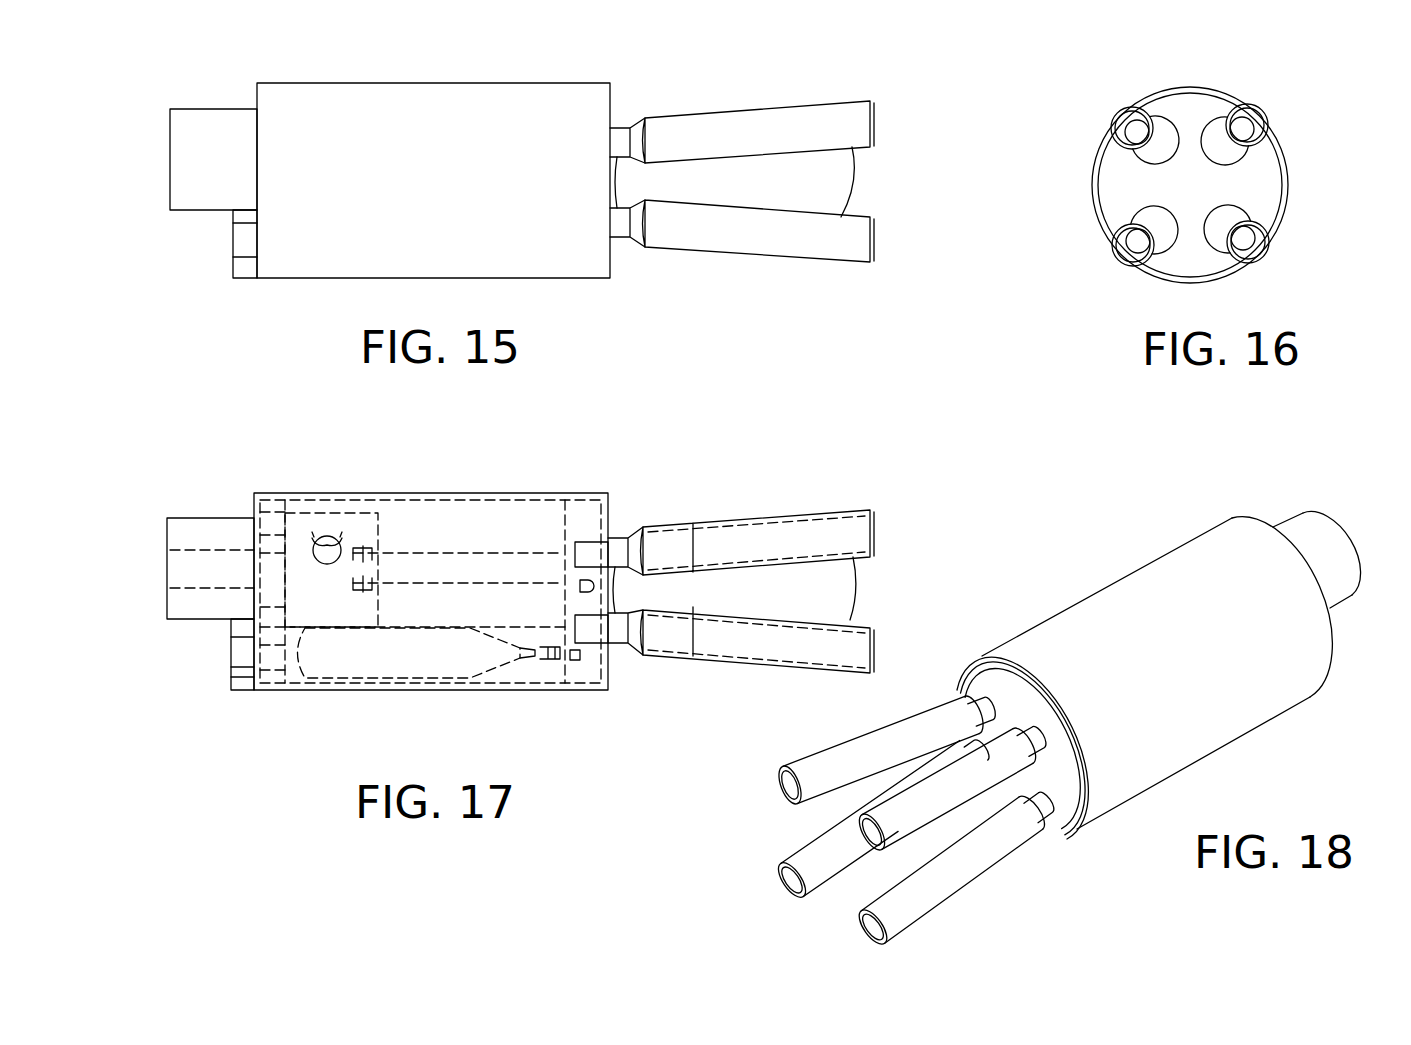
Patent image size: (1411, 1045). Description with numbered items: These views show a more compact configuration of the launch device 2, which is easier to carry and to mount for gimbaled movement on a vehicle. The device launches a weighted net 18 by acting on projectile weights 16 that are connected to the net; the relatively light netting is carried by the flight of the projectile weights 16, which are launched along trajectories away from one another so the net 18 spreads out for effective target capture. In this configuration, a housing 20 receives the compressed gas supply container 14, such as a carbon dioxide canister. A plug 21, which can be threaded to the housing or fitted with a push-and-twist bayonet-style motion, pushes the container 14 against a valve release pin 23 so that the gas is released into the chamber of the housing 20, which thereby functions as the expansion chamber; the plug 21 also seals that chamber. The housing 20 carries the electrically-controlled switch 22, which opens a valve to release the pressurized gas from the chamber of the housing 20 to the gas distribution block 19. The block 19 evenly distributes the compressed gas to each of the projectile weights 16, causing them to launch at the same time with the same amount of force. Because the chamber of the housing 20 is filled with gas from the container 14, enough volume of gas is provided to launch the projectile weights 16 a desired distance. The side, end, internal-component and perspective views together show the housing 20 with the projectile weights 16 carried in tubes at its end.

In FIG. 15, the launch device 2 is at (555, 192).
In FIG. 16, the launch device 2 is at (1204, 160).
In FIG. 17, the launch device 2 is at (556, 593).
In FIG. 18, the launch device 2 is at (1064, 691).
In FIG. 17, the compressed carbon dioxide container 14 is at (412, 657).
In FIG. 15, the projectile weights 16 is at (838, 220).
In FIG. 16, the projectile weights 16 is at (1142, 216).
In FIG. 17, the projectile weights 16 is at (828, 532).
In FIG. 18, the projectile weights 16 is at (803, 860).
In FIG. 15, the weighted net 18 is at (768, 182).
In FIG. 17, the weighted net 18 is at (775, 602).
In FIG. 16, the gas distribution block 19 is at (1178, 115).
In FIG. 17, the gas distribution block 19 is at (602, 657).
In FIG. 18, the gas distribution block 19 is at (1066, 776).
In FIG. 15, the housing 20 is at (472, 85).
In FIG. 16, the housing 20 is at (1192, 90).
In FIG. 17, the housing 20 is at (478, 493).
In FIG. 18, the housing 20 is at (1105, 598).
In FIG. 15, the plug 21 is at (233, 248).
In FIG. 17, the plug 21 is at (235, 655).
In FIG. 15, the electrically-controlled switch 22 is at (210, 113).
In FIG. 17, the electrically-controlled switch 22 is at (210, 527).
In FIG. 18, the electrically-controlled switch 22 is at (1302, 522).
In FIG. 17, the valve release pin 23 is at (545, 650).